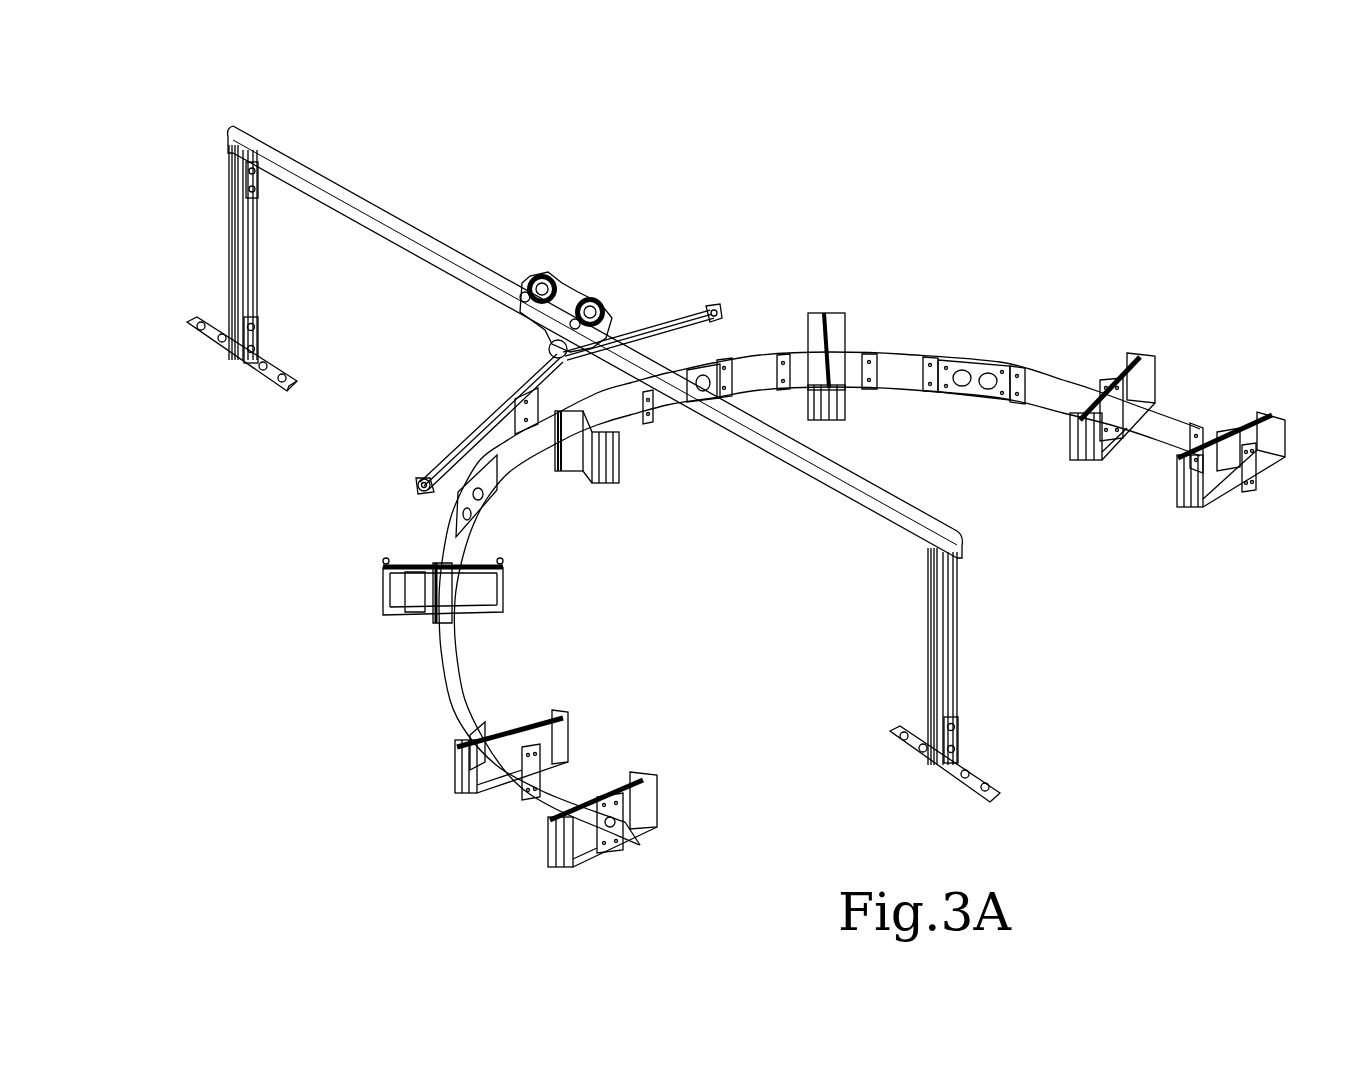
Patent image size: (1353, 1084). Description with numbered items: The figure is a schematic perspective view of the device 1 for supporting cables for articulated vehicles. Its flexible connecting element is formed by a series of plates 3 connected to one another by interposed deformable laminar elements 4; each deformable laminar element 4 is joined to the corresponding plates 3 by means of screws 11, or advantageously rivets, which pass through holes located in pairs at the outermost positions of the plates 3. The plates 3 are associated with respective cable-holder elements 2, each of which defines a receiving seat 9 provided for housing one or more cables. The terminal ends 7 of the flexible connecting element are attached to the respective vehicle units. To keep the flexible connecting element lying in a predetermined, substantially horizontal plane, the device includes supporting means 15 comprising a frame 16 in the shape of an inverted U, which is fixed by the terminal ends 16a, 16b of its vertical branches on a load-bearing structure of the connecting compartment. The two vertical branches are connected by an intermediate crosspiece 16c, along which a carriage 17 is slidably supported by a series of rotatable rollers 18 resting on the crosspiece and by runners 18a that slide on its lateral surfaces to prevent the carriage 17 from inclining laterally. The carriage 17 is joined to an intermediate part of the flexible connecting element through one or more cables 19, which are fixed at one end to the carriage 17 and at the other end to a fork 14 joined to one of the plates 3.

The device for supporting cables 1 is at (883, 175).
The cable-holder element 2 is at (1283, 438).
The plate 3 is at (990, 365).
The deformable laminar element 4 is at (900, 360).
The terminal end 7 is at (1252, 478).
The receiving seat 9 is at (415, 614).
The screw 11 is at (1018, 380).
The fork 14 is at (437, 488).
The supporting means 15 is at (486, 238).
The frame 16 is at (374, 180).
The terminal end of vertical branch 16a is at (190, 333).
The terminal end of vertical branch 16b is at (978, 765).
The intermediate crosspiece 16c is at (276, 150).
The carriage 17 is at (578, 283).
The rotatable roller 18 is at (545, 280).
The runner 18a is at (643, 335).
The cable 19 is at (470, 422).